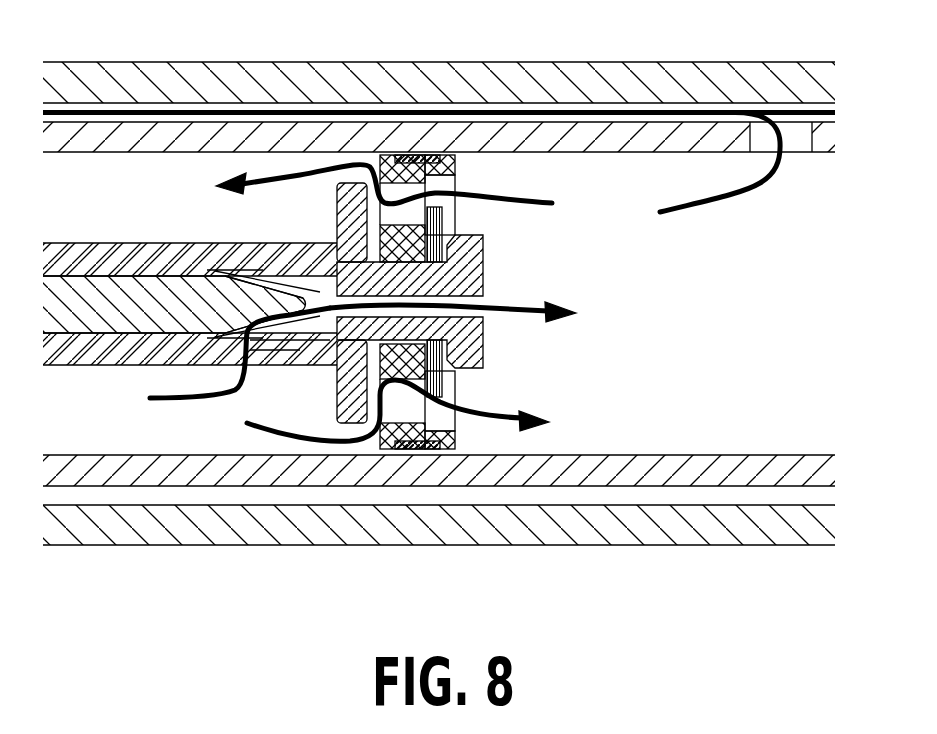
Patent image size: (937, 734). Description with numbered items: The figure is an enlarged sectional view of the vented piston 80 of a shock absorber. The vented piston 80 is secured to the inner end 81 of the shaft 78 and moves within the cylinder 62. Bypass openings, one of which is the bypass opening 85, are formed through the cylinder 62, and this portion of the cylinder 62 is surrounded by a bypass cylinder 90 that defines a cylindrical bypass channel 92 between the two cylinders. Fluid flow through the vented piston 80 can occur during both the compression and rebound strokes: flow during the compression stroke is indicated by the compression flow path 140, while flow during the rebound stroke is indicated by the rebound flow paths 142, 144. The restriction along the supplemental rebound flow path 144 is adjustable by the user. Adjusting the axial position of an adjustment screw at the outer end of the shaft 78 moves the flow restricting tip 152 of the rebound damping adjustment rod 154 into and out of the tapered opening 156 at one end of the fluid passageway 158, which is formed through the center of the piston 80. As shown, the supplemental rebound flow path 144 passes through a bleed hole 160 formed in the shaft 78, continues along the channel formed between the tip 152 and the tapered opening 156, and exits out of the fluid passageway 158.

The cylinder 62 is at (580, 152).
The shaft 78 is at (72, 367).
The vented piston 80 is at (557, 238).
The inner end 81 is at (165, 367).
The bypass opening 85 is at (800, 152).
The bypass cylinder 90 is at (500, 62).
The bypass channel 92 is at (272, 107).
The compression flow path 140 is at (507, 193).
The rebound flow path 142 is at (484, 417).
The supplemental rebound flow path 144 is at (527, 309).
The flow restricting tip 152 is at (228, 298).
The rebound damping adjustment rod 154 is at (128, 303).
The tapered opening 156 is at (252, 272).
The fluid passageway 158 is at (453, 297).
The bleed hole 160 is at (252, 352).